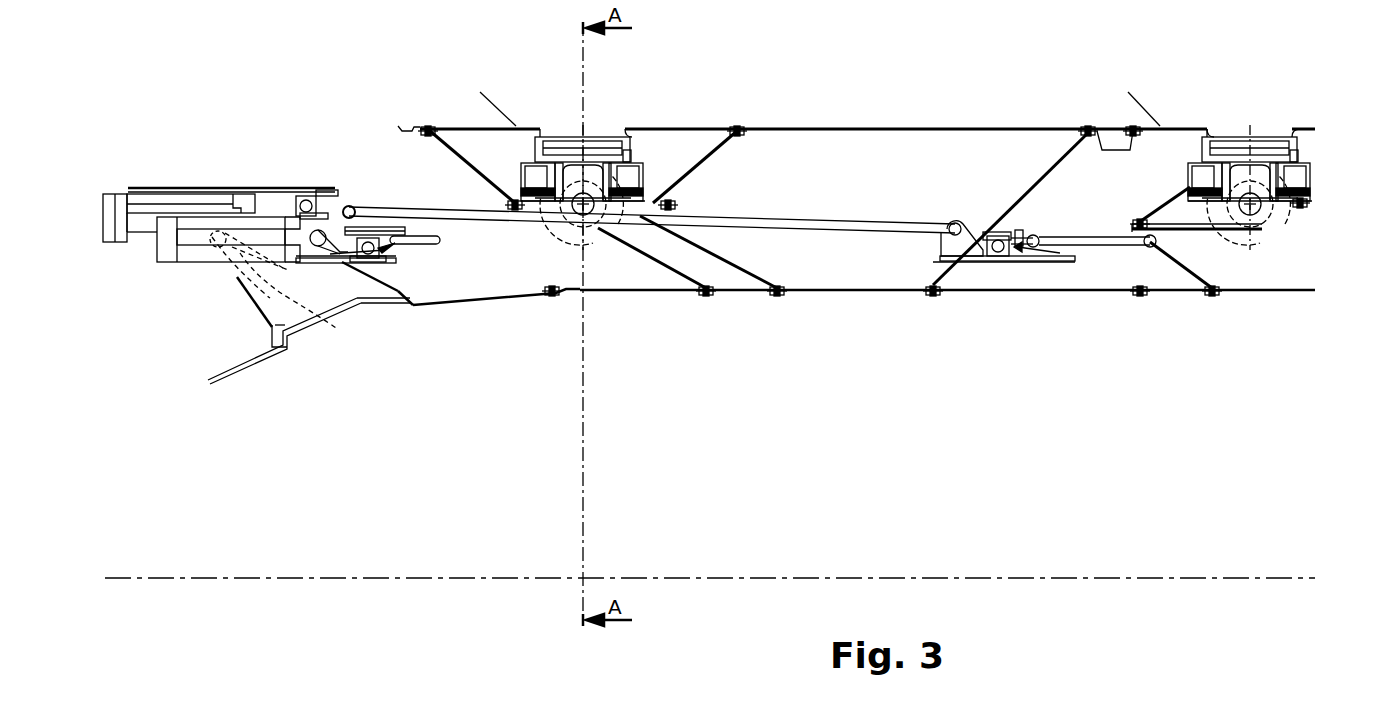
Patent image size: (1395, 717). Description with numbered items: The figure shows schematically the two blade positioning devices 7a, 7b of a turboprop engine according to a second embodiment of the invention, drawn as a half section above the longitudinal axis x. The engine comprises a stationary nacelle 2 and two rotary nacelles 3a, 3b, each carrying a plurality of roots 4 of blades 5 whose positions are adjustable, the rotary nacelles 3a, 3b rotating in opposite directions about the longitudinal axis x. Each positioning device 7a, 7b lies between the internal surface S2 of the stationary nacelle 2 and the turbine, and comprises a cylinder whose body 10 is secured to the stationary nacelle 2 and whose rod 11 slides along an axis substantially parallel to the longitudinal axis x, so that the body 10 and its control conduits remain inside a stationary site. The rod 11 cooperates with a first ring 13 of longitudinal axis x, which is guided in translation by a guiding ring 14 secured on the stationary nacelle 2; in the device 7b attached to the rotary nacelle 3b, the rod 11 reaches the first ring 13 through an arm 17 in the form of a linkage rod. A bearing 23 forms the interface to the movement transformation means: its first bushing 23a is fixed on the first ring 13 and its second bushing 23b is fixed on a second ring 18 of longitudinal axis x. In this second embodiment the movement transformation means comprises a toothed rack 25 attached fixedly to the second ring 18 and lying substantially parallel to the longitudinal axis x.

The stationary nacelle 2 is at (380, 125).
The rotary nacelle 3a is at (780, 128).
The rotary nacelle 3b is at (1140, 128).
The blade root 4 is at (625, 142).
The blade 5 is at (738, 104).
The blade positioning device 7a is at (140, 264).
The blade positioning device 7b is at (120, 175).
The body 10 is at (142, 200).
The rod 11 is at (242, 250).
The first ring 13 is at (933, 256).
The guiding ring 14 is at (452, 262).
The arm 17 is at (780, 222).
The second ring 18 is at (1010, 230).
The bearing 23 is at (308, 258).
The first bushing 23a is at (372, 264).
The second bushing 23b is at (368, 238).
The toothed rack 25 is at (505, 236).
The internal surface of stationary nacelle S2 is at (372, 124).
The longitudinal axis x is at (1028, 583).